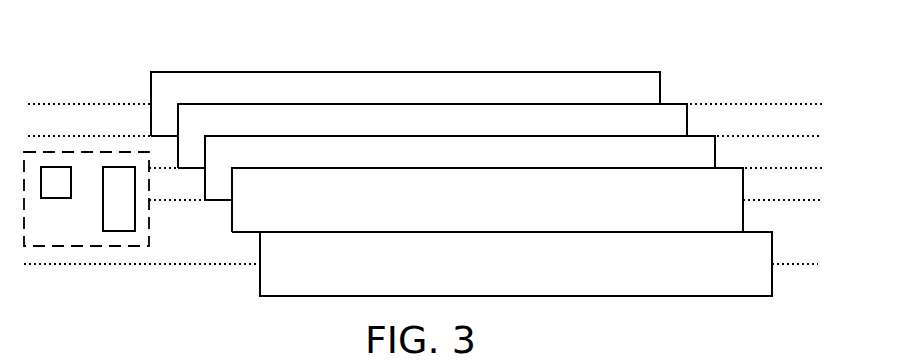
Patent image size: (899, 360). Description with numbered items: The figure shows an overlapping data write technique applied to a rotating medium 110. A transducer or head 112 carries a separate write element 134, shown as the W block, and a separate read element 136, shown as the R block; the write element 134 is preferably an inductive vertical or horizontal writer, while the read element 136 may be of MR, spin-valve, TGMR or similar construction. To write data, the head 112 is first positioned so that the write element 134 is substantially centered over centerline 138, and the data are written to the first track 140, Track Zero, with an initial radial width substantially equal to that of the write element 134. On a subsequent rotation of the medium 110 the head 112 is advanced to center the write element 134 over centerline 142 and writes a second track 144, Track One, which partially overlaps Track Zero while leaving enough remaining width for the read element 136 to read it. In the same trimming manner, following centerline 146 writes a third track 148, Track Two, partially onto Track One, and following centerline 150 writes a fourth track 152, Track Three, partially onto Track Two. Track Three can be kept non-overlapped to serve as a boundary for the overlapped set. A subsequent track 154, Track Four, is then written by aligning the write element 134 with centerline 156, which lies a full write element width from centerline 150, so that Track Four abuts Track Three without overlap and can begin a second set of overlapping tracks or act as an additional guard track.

The medium 110 is at (258, 45).
The transducer (head) 112 is at (60, 275).
The write element 134 is at (118, 231).
The read element 136 is at (55, 166).
The centerline 138 is at (703, 104).
The first track 140 is at (404, 80).
The centerline 142 is at (782, 168).
The second track 144 is at (480, 110).
The centerline 146 is at (762, 136).
The third track 148 is at (582, 145).
The centerline 150 is at (790, 204).
The fourth track 152 is at (540, 218).
The subsequent track 154 is at (635, 280).
The centerline 156 is at (805, 268).